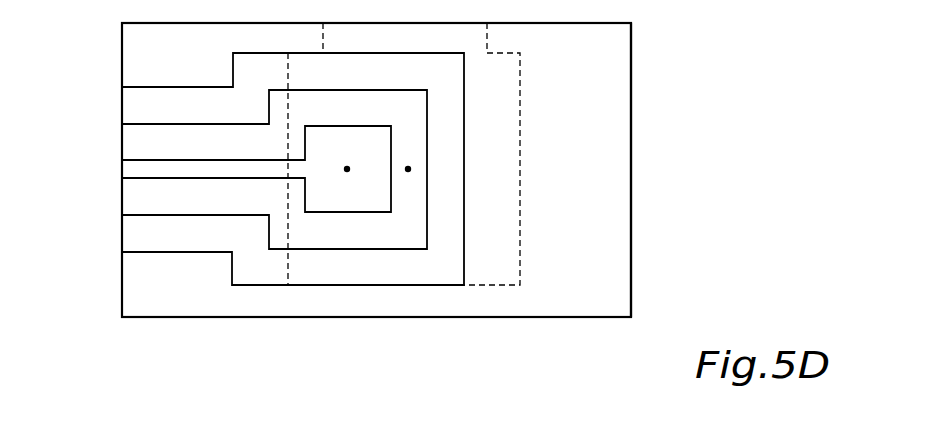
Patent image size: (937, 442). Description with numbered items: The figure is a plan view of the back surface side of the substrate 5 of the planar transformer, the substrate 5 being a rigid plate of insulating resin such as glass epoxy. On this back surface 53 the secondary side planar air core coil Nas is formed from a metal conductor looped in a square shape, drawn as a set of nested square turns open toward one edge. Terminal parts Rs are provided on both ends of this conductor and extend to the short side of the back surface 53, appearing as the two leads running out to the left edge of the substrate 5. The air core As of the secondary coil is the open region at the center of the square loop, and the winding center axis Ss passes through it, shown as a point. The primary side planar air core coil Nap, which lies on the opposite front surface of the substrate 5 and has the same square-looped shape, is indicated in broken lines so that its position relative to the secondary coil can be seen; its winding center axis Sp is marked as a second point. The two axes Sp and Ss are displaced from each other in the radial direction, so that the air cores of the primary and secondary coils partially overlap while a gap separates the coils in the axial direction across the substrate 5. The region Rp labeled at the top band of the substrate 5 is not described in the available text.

The substrate 5 is at (631, 52).
The back surface 53 is at (622, 145).
The peripheral region Rp is at (352, 30).
The terminal parts Rs is at (130, 103).
The secondary side planar air core coil Nas is at (453, 232).
The primary side planar air core coil Nap is at (492, 269).
The air core As is at (335, 212).
The winding center axis Ss is at (347, 166).
The winding center axis Sp is at (410, 168).